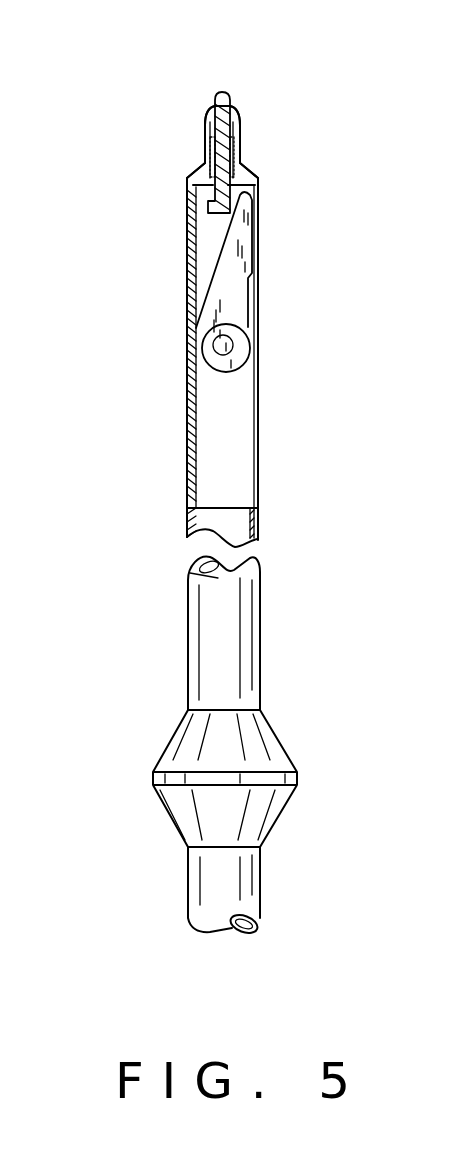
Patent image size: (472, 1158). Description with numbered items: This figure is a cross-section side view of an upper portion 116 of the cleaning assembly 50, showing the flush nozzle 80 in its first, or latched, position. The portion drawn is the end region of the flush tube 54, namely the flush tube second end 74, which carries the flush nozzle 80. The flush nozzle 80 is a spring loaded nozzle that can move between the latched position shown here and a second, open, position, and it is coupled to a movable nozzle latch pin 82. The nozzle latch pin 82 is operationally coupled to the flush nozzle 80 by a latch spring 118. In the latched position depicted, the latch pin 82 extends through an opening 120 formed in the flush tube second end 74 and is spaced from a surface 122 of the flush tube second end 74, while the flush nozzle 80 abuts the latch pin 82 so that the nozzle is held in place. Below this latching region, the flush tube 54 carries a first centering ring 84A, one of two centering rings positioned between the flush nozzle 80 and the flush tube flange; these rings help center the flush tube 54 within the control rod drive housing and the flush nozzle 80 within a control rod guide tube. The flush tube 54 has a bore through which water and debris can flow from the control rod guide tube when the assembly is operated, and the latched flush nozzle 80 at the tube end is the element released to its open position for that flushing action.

The cleaning assembly 50 is at (363, 94).
The upper portion 116 is at (162, 92).
The flush tube second end 74 is at (191, 318).
The flush nozzle 80 is at (226, 268).
The latch spring 118 is at (205, 160).
The nozzle latch pin 82 is at (225, 100).
The opening 120 is at (224, 99).
The surface 122 is at (242, 111).
The first centering ring 84A is at (198, 752).
The flush tube 54 is at (228, 878).